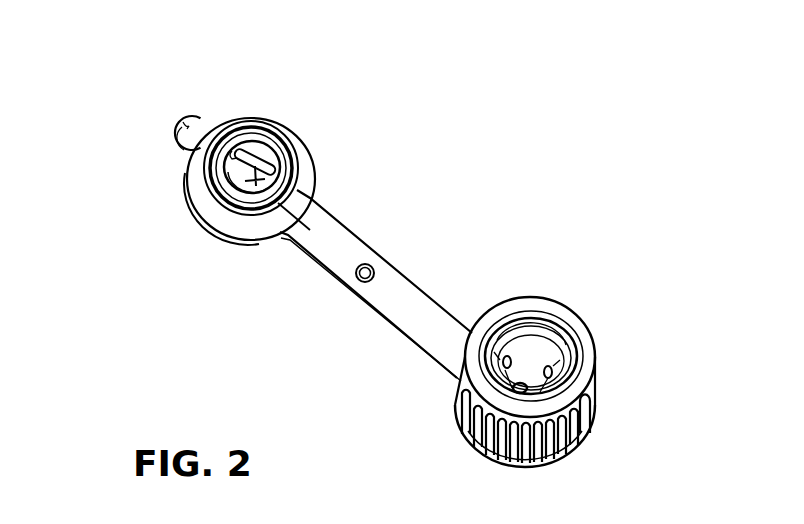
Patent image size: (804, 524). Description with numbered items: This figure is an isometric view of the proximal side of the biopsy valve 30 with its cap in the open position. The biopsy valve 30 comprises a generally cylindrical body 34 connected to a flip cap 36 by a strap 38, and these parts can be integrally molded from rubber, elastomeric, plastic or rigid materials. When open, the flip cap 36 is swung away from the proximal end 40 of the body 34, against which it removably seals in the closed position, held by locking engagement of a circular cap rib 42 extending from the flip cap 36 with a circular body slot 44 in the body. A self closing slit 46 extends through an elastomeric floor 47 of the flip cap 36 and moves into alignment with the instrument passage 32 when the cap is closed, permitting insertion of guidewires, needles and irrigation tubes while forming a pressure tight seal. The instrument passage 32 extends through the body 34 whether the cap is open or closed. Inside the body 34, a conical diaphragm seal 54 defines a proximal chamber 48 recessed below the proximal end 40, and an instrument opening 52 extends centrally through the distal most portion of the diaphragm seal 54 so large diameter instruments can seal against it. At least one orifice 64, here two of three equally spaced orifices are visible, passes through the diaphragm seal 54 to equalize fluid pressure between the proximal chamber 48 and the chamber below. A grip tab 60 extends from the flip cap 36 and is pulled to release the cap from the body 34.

The biopsy valve 30 is at (270, 357).
The instrument passage 32 is at (272, 120).
The cylindrical body 34 is at (570, 453).
The flip cap 36 is at (297, 148).
The strap 38 is at (403, 310).
The proximal end 40 is at (578, 381).
The circular cap rib 42 is at (295, 180).
The circular body slot 44 is at (580, 334).
The self closing slit 46 is at (272, 188).
The elastomeric floor 47 is at (233, 150).
The proximal chamber 48 is at (560, 330).
The instrument opening 52 is at (505, 392).
The diaphragm seal 54 is at (477, 352).
The grip tab 60 is at (187, 127).
The orifice 64 is at (536, 340).